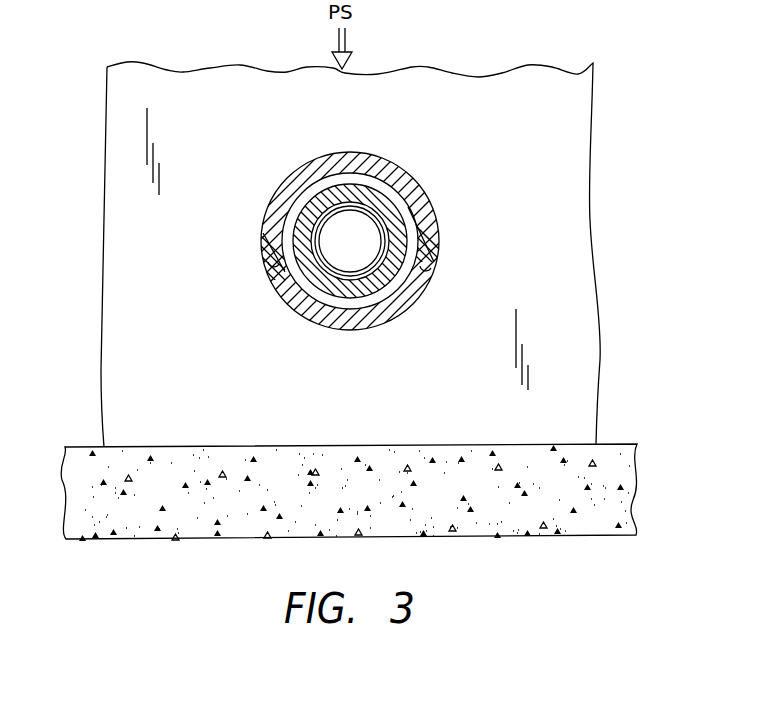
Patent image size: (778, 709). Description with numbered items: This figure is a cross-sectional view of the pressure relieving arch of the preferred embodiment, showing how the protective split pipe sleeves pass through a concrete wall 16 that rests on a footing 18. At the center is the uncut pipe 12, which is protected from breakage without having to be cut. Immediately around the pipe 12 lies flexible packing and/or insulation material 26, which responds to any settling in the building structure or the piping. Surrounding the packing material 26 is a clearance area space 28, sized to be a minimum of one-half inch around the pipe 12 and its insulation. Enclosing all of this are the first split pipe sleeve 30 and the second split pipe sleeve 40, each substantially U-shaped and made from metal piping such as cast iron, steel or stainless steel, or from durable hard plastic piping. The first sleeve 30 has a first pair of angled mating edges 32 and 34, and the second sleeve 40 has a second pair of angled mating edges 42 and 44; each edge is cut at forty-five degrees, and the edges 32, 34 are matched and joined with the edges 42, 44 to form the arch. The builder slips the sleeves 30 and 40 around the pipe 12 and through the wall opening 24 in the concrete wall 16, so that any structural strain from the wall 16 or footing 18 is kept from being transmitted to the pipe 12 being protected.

The uncut pipe 12 is at (332, 266).
The concrete wall 16 is at (540, 289).
The footing 18 is at (597, 480).
The wall opening 24 is at (332, 155).
The packing and/or insulation material 26 is at (377, 202).
The clearance area space 28 is at (314, 295).
The first split pipe sleeve 30 is at (292, 172).
The first angled mating edge 32 is at (270, 278).
The first angled mating edge 34 is at (433, 270).
The second split pipe sleeve 40 is at (330, 329).
The second angled mating edge 42 is at (279, 250).
The second angled mating edge 44 is at (431, 242).